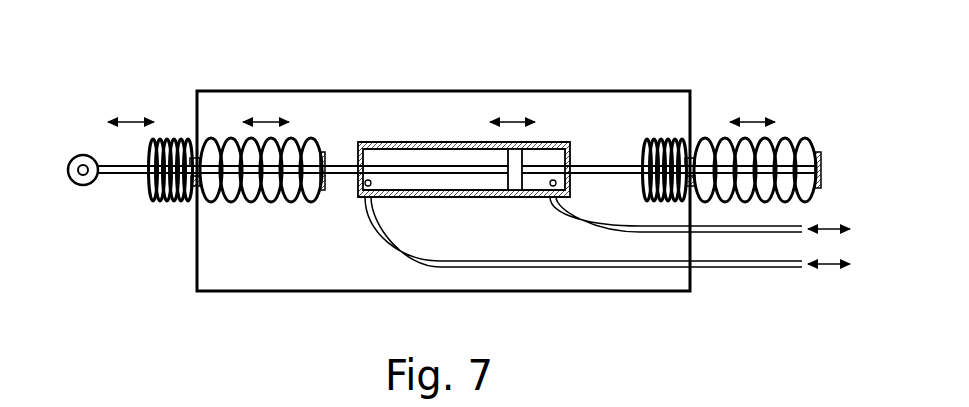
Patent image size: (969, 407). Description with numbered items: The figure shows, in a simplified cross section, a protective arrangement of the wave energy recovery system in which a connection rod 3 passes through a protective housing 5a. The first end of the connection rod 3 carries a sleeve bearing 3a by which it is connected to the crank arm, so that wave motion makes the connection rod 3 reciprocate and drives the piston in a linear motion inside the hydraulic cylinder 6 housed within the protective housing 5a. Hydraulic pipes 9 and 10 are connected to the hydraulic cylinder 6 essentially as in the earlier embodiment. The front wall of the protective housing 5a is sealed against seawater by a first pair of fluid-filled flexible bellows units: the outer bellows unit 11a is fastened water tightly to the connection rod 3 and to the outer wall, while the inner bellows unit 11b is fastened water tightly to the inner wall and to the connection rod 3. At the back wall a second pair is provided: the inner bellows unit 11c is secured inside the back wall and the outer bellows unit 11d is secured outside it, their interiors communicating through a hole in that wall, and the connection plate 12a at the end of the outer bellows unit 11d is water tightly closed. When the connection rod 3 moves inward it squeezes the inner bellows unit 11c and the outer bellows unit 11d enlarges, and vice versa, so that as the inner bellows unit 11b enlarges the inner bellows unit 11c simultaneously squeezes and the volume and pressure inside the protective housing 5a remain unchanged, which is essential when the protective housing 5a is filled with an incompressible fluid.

The connection rod 3 is at (137, 176).
The sleeve bearing 3a is at (70, 184).
The protective housing 5a is at (575, 100).
The hydraulic cylinder 6 is at (470, 197).
The hydraulic pipe 9 is at (786, 265).
The hydraulic pipe 10 is at (562, 218).
The outer bellows unit 11a is at (173, 113).
The inner bellows unit 11b is at (276, 213).
The inner bellows unit 11c is at (666, 116).
The outer bellows unit 11d is at (802, 128).
The connection plate 12a is at (822, 168).